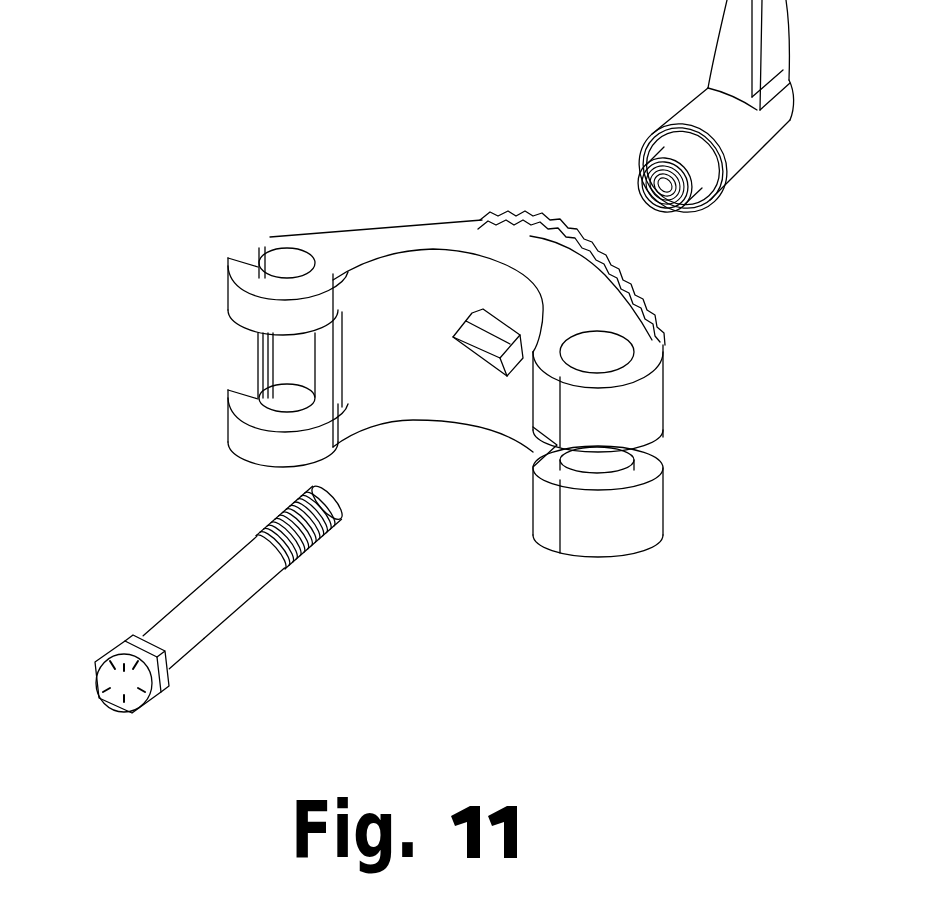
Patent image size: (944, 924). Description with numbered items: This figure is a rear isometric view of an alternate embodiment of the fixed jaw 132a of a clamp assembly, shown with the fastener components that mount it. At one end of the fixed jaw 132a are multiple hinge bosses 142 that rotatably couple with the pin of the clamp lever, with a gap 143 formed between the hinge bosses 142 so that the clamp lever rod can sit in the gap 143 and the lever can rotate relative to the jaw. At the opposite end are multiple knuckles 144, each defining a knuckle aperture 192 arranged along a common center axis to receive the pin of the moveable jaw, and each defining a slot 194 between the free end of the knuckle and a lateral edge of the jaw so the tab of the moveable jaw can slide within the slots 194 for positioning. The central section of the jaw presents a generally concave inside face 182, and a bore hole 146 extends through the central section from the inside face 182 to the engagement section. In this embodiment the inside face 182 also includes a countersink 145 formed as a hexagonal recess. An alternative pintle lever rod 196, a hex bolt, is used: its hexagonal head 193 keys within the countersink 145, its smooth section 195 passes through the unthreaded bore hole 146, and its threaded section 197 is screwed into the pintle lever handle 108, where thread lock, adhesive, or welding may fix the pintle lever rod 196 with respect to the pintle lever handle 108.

The pintle lever handle 108 is at (753, 147).
The fixed jaw 132a is at (580, 191).
The hinge bosses 142 is at (663, 372).
The gap 143 is at (676, 425).
The knuckles 144 is at (237, 295).
The countersink 145 is at (441, 319).
The bore hole 146 is at (483, 351).
The inside face 182 is at (482, 383).
The knuckle aperture 192 is at (265, 243).
The hexagonal head 193 is at (150, 710).
The slot 194 is at (216, 236).
The smooth section 195 is at (185, 657).
The pintle lever rod 196 is at (245, 607).
The threaded section 197 is at (290, 545).